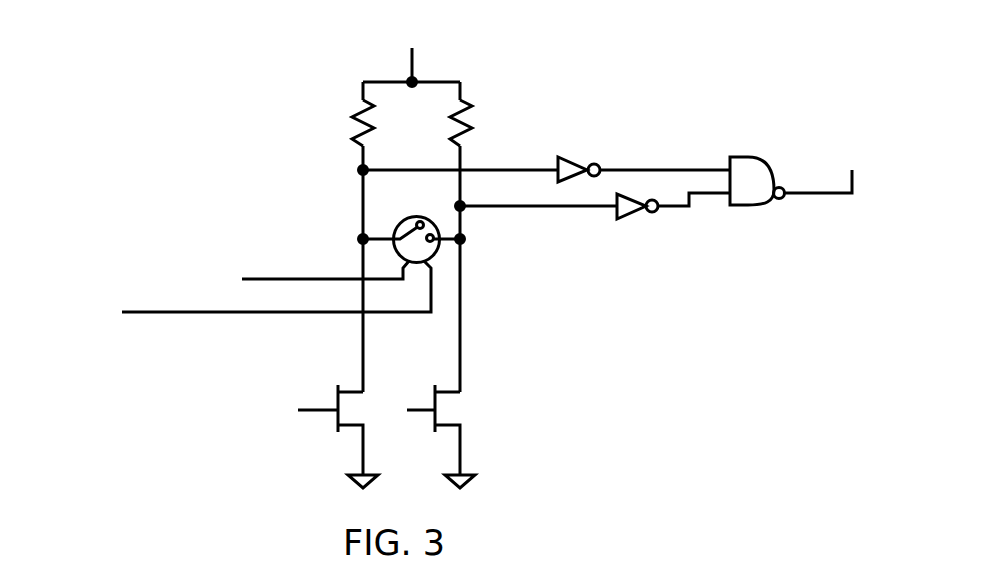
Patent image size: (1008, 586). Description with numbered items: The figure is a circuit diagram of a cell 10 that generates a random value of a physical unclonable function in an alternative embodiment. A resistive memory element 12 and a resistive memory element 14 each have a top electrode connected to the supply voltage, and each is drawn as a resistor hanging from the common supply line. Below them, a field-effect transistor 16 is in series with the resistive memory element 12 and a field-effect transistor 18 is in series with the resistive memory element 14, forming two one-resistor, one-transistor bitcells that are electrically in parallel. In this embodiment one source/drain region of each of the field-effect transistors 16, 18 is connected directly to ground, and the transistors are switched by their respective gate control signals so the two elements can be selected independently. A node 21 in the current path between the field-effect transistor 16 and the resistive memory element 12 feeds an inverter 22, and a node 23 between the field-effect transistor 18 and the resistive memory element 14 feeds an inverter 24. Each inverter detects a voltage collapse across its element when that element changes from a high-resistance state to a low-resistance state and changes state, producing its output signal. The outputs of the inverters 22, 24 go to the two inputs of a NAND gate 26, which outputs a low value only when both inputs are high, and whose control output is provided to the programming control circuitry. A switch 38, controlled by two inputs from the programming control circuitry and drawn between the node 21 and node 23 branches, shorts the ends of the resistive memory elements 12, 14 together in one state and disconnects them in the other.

The cell 10 is at (140, 57).
The resistive memory element 12 is at (335, 123).
The resistive memory element 14 is at (492, 116).
The field-effect transistor 16 is at (311, 386).
The field-effect transistor 18 is at (485, 432).
The node 21 is at (363, 170).
The inverter 22 is at (563, 173).
The node 23 is at (460, 206).
The inverter 24 is at (627, 213).
The NAND gate 26 is at (745, 190).
The switch 38 is at (374, 222).